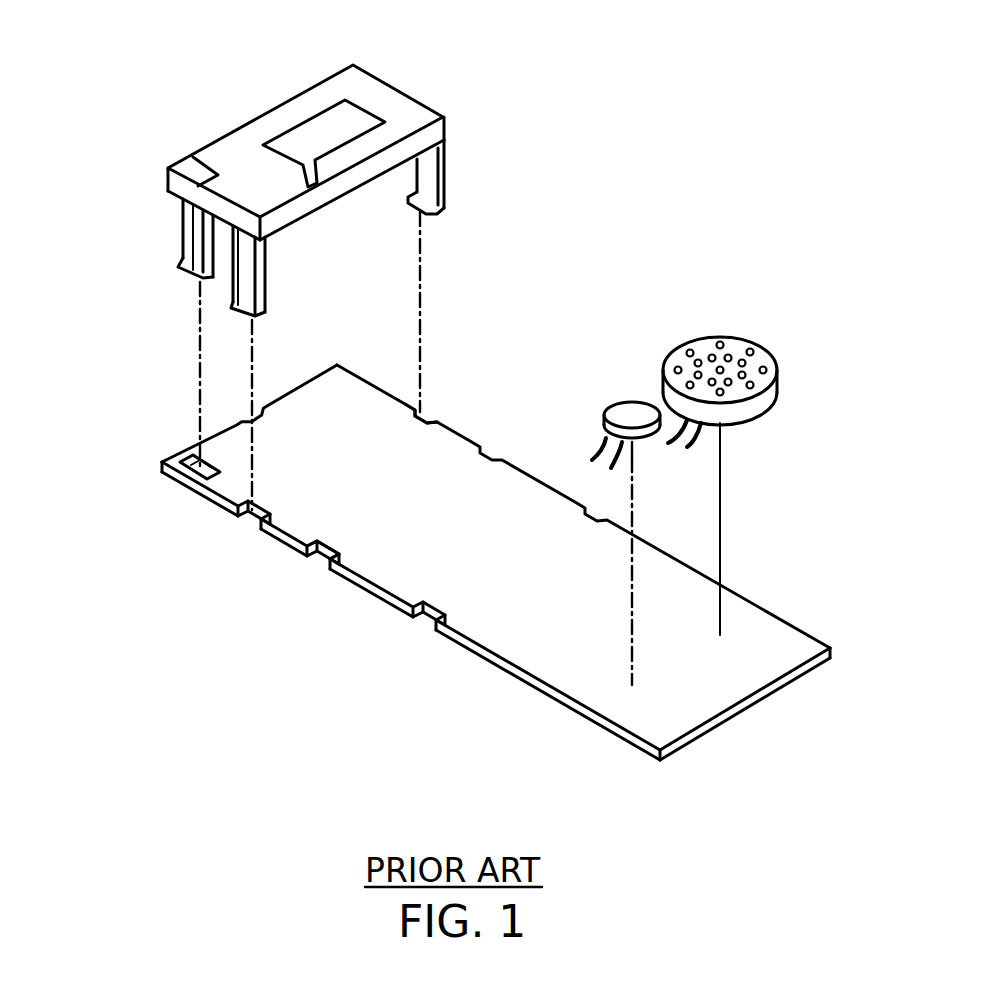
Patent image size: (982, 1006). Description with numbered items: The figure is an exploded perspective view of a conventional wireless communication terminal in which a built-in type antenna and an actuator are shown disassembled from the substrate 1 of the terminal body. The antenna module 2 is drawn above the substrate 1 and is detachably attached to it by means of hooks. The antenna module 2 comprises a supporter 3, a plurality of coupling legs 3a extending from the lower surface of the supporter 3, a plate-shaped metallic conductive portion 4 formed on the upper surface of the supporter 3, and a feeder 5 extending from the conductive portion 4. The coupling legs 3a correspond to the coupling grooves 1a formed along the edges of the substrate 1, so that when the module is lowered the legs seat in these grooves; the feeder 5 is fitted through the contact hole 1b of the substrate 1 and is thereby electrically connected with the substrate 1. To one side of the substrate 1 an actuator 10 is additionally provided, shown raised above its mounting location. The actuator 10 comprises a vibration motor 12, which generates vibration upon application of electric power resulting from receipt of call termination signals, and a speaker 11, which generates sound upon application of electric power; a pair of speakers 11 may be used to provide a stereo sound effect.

The substrate 1 is at (441, 553).
The coupling grooves 1a is at (420, 410).
The contact hole 1b is at (187, 460).
The antenna module 2 is at (317, 257).
The supporter 3 is at (440, 133).
The coupling leg 3a is at (438, 172).
The conductive portion 4 is at (380, 100).
The feeder 5 is at (185, 245).
The actuator 10 is at (721, 457).
The speaker 11 is at (622, 398).
The vibration motor 12 is at (756, 467).